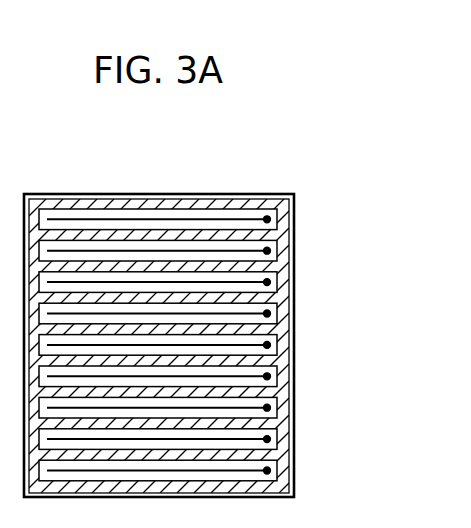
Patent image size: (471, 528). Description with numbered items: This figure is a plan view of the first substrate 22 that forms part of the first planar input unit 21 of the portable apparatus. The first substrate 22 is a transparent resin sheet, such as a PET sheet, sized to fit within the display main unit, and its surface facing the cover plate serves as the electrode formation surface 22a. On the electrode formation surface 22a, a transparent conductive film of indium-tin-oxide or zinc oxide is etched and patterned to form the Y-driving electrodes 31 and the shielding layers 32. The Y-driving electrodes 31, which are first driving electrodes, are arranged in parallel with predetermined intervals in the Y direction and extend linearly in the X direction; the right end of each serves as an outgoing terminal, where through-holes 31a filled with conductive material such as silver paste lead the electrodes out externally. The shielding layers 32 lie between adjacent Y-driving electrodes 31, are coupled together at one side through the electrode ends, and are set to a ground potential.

The first planar input unit 21 is at (317, 429).
The first substrate 22 is at (302, 340).
The electrode formation surface 22a is at (78, 213).
The Y-driving electrodes 31 is at (149, 249).
The through-holes 31a is at (267, 219).
The shielding layers 32 is at (33, 203).